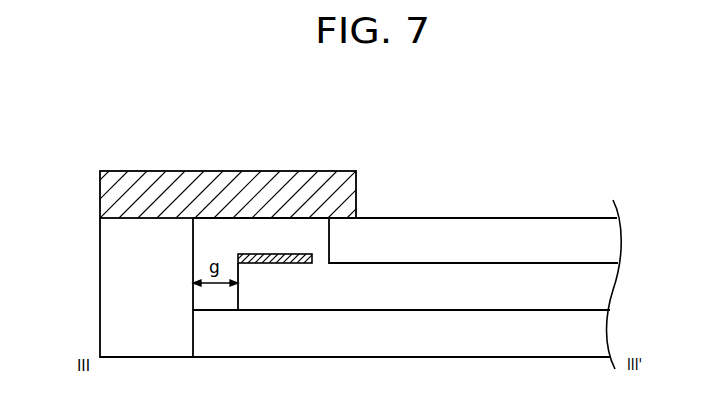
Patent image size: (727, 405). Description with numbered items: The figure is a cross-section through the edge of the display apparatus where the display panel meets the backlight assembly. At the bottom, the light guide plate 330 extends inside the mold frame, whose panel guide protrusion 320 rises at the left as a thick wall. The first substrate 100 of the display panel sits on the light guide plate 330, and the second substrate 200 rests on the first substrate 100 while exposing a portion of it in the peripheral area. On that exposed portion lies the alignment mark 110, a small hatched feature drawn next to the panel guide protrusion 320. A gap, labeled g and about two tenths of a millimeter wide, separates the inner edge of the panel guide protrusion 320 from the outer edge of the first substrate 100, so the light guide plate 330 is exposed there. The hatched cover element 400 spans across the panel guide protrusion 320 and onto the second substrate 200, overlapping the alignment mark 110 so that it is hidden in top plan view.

The alignment mark 110 is at (273, 254).
The first substrate 100 is at (603, 288).
The second substrate 200 is at (607, 237).
The panel guide protrusion 320 is at (108, 287).
The light guide plate 330 is at (598, 334).
The cover element 400 is at (110, 192).